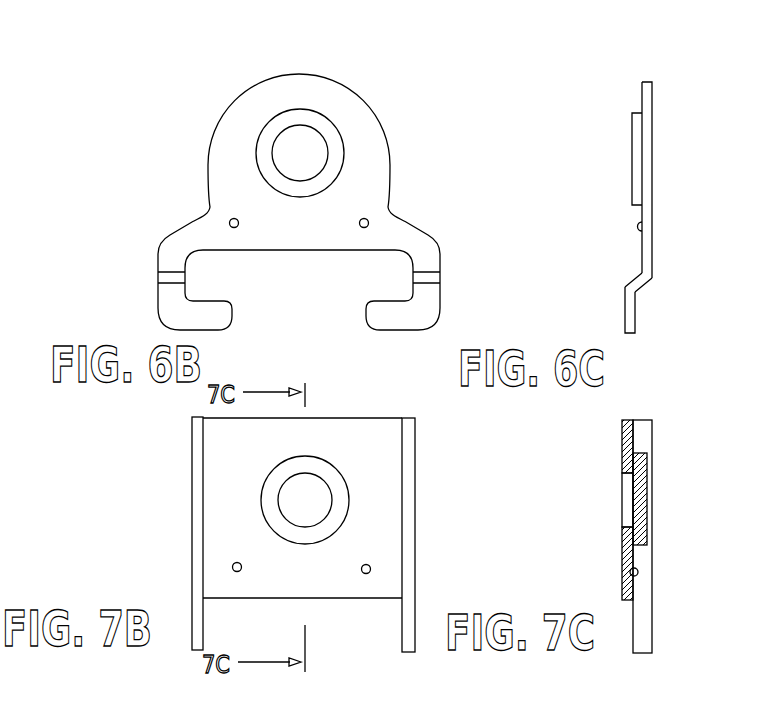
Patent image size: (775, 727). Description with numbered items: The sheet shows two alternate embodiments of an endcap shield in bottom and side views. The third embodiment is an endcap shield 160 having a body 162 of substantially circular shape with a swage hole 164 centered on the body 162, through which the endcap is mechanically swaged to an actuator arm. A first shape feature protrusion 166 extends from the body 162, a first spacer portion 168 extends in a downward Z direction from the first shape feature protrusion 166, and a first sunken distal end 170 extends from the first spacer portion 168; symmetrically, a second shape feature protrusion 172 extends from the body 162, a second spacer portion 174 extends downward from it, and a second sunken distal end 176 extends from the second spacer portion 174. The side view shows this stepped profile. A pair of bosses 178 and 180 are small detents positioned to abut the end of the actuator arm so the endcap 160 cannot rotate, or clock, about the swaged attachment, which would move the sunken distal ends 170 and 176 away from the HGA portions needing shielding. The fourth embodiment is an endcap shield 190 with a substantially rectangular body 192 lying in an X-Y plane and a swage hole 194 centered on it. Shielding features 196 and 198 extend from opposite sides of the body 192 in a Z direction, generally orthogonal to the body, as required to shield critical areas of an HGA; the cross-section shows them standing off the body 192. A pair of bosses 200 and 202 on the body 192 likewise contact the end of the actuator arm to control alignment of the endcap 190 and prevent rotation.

In FIG. 6B, the endcap shield 160 is at (200, 113).
In FIG. 6C, the endcap shield 160 is at (703, 126).
In FIG. 6B, the body 162 is at (209, 141).
In FIG. 6C, the body 162 is at (642, 80).
In FIG. 6B, the swage hole 164 is at (331, 122).
In FIG. 6C, the swage hole 164 is at (631, 146).
In FIG. 6B, the first shape feature protrusion 166 is at (178, 248).
In FIG. 6B, the first spacer portion 168 is at (172, 280).
In FIG. 6B, the first sunken distal end 170 is at (210, 318).
In FIG. 6B, the second shape feature protrusion 172 is at (417, 249).
In FIG. 6C, the second shape feature protrusion 172 is at (652, 262).
In FIG. 6B, the second spacer portion 174 is at (430, 282).
In FIG. 6C, the second spacer portion 174 is at (634, 277).
In FIG. 6B, the second sunken distal end 176 is at (382, 318).
In FIG. 6C, the second sunken distal end 176 is at (630, 313).
In FIG. 6B, the boss 178 is at (230, 221).
In FIG. 6B, the boss 180 is at (368, 220).
In FIG. 6C, the boss 180 is at (636, 226).
In FIG. 7B, the endcap shield 190 is at (174, 464).
In FIG. 7C, the endcap shield 190 is at (598, 469).
In FIG. 7B, the body 192 is at (232, 473).
In FIG. 7C, the body 192 is at (633, 440).
In FIG. 7B, the swage hole 194 is at (262, 504).
In FIG. 7C, the swage hole 194 is at (647, 513).
In FIG. 7B, the shielding feature 196 is at (197, 615).
In FIG. 7B, the shielding feature 198 is at (408, 624).
In FIG. 7C, the shielding feature 198 is at (645, 622).
In FIG. 7B, the boss 200 is at (238, 572).
In FIG. 7B, the boss 202 is at (366, 574).
In FIG. 7C, the boss 202 is at (638, 574).